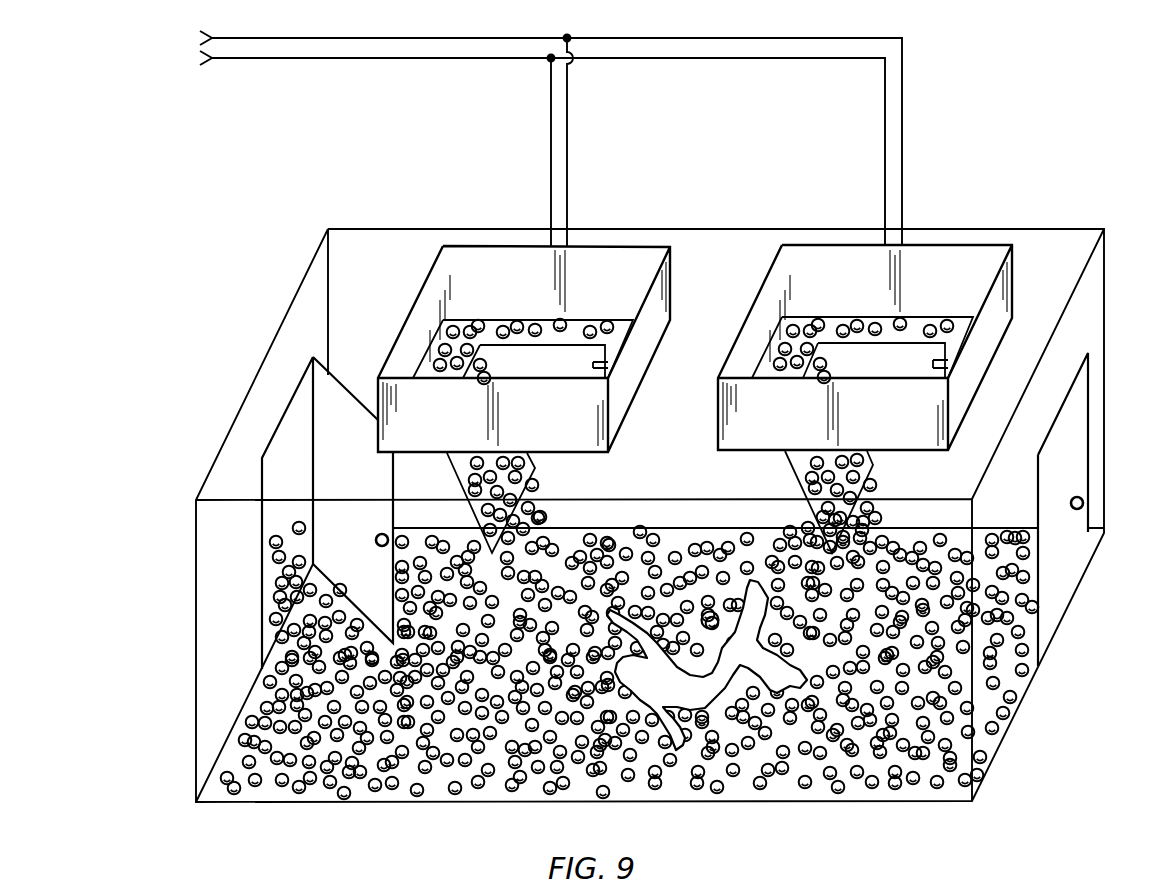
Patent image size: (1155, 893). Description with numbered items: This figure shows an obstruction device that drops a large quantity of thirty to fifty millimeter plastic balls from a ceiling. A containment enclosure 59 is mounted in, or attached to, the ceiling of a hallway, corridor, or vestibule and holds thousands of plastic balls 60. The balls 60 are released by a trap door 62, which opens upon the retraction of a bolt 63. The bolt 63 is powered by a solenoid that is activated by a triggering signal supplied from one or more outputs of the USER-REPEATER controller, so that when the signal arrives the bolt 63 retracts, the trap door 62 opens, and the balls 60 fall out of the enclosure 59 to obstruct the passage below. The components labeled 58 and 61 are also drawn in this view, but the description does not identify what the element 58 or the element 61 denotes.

The input wires 58 is at (264, 64).
The containment enclosure 59 is at (635, 240).
The plastic balls 60 is at (268, 750).
The second hopper 61 is at (936, 399).
The trap door 62 is at (548, 483).
The bolt 63 is at (962, 362).